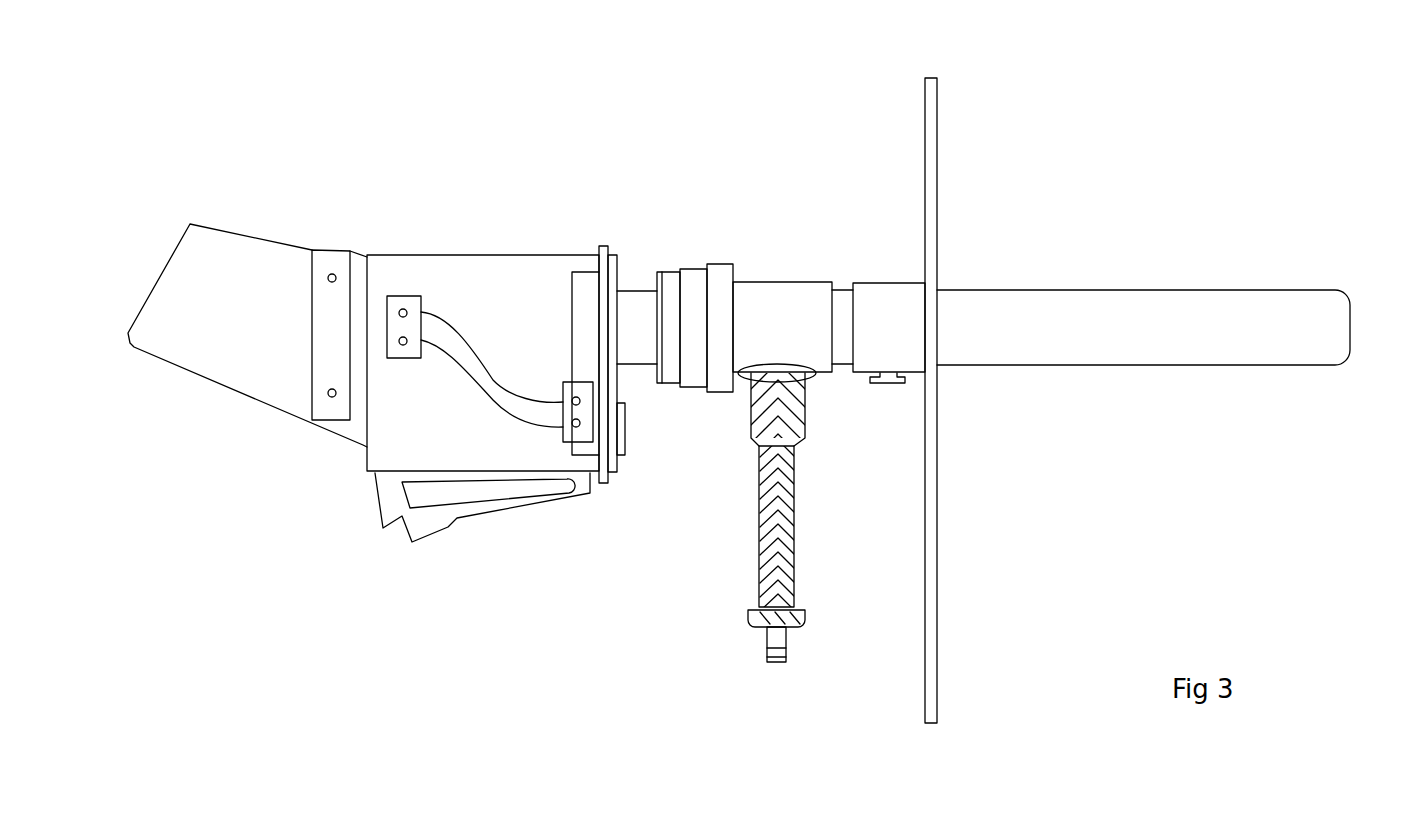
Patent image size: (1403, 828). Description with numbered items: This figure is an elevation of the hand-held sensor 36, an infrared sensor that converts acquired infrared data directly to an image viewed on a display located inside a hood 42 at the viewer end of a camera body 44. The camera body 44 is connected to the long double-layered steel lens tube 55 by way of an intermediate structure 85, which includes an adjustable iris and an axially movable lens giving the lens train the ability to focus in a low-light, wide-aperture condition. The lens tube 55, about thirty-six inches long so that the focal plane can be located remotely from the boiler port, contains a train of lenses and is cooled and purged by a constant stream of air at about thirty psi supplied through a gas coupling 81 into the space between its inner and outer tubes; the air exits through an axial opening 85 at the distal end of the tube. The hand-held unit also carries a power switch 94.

The hand-held sensor 36 is at (622, 120).
The hood 42 is at (171, 258).
The camera body 44 is at (458, 254).
The double-layered steel lens tube 55 is at (1100, 290).
The gas coupling 81 is at (770, 662).
The intermediate structure 85 is at (790, 172).
The power switch 94 is at (627, 433).